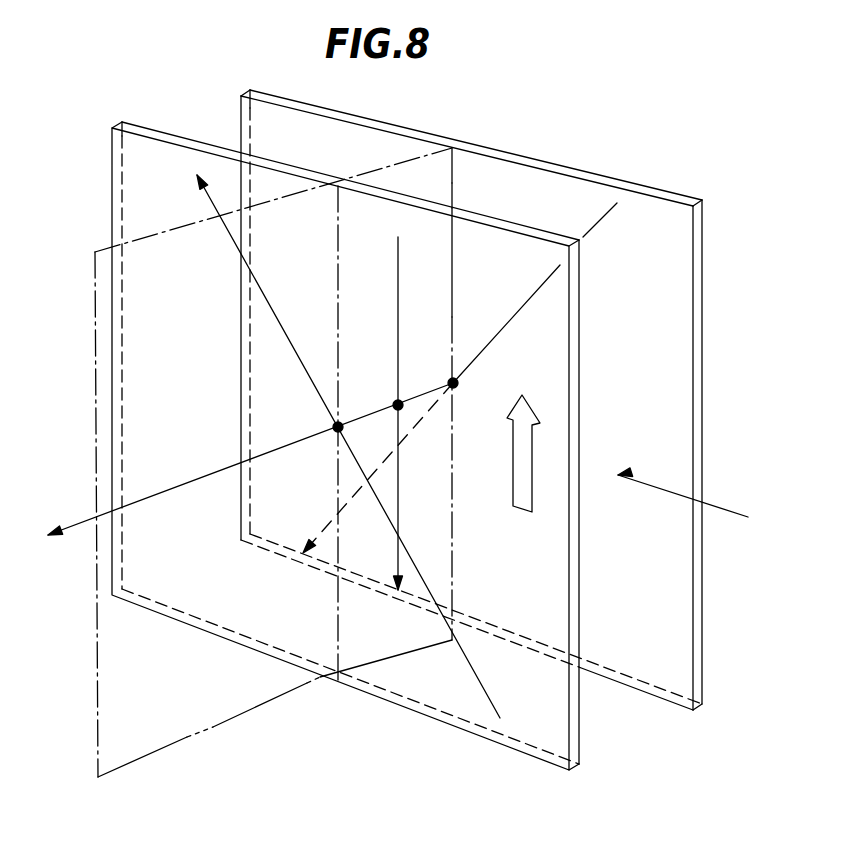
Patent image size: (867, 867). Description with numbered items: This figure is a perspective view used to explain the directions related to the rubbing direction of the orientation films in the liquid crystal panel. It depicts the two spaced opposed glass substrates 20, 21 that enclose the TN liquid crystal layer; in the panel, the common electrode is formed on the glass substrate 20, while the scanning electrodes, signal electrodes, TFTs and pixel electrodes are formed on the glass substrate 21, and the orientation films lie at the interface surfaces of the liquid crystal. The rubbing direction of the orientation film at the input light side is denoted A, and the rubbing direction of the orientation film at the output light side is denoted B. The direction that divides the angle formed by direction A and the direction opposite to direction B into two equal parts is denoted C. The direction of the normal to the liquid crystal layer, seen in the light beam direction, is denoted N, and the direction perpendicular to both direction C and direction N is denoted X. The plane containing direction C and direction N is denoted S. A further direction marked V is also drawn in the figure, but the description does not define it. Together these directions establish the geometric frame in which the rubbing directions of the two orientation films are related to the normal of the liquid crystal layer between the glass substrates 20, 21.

The glass substrate 20 is at (703, 703).
The glass substrate 21 is at (580, 762).
The rubbing direction of the input-side orientation film A is at (570, 205).
The rubbing direction of the output-side orientation film B is at (204, 201).
The bisecting direction C is at (396, 248).
The normal direction N is at (82, 527).
The plane containing directions C and N S is at (228, 719).
The viewing direction V is at (541, 436).
The perpendicular direction X is at (735, 502).